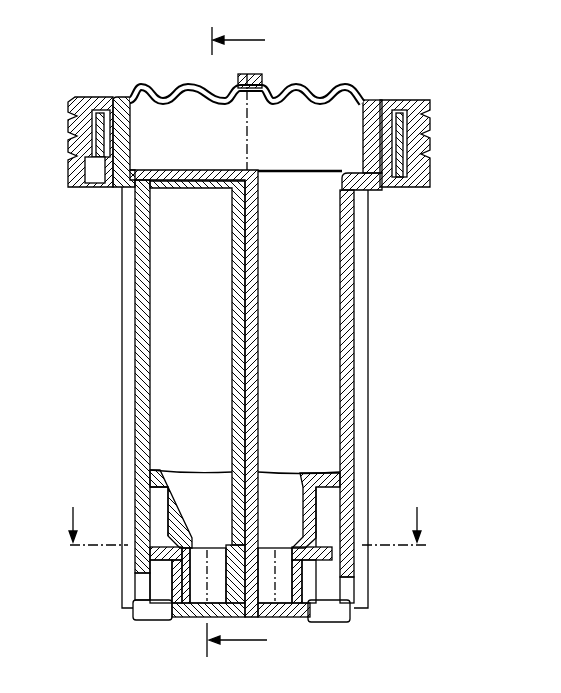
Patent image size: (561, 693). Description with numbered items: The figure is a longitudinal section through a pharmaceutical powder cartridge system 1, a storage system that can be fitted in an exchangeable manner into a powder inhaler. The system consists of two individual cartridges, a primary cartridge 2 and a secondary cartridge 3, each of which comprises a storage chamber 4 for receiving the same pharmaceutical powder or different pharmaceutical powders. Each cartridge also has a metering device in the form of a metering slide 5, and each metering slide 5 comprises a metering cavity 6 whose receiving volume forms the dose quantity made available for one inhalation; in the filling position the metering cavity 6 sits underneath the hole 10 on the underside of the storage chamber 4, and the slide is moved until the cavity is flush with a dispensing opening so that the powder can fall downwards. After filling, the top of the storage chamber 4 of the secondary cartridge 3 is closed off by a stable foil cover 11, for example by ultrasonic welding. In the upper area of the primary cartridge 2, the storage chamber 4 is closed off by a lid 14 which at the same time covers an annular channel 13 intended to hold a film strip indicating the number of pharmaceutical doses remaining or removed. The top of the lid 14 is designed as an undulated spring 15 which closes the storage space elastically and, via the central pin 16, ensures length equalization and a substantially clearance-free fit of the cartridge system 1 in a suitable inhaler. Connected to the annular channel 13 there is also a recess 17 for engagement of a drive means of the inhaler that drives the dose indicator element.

The pharmaceutical powder cartridge system 1 is at (50, 101).
The primary cartridge 2 is at (350, 365).
The secondary cartridge 3 is at (148, 383).
The storage chamber 4 is at (172, 308).
The metering slide 5 is at (308, 548).
The metering cavity 6 is at (285, 580).
The hole 10 is at (273, 540).
The foil cover 11 is at (188, 190).
The annular channel 13 is at (97, 120).
The lid 14 is at (122, 103).
The undulated spring 15 is at (160, 93).
The central pin 16 is at (233, 80).
The recess 17 is at (96, 175).